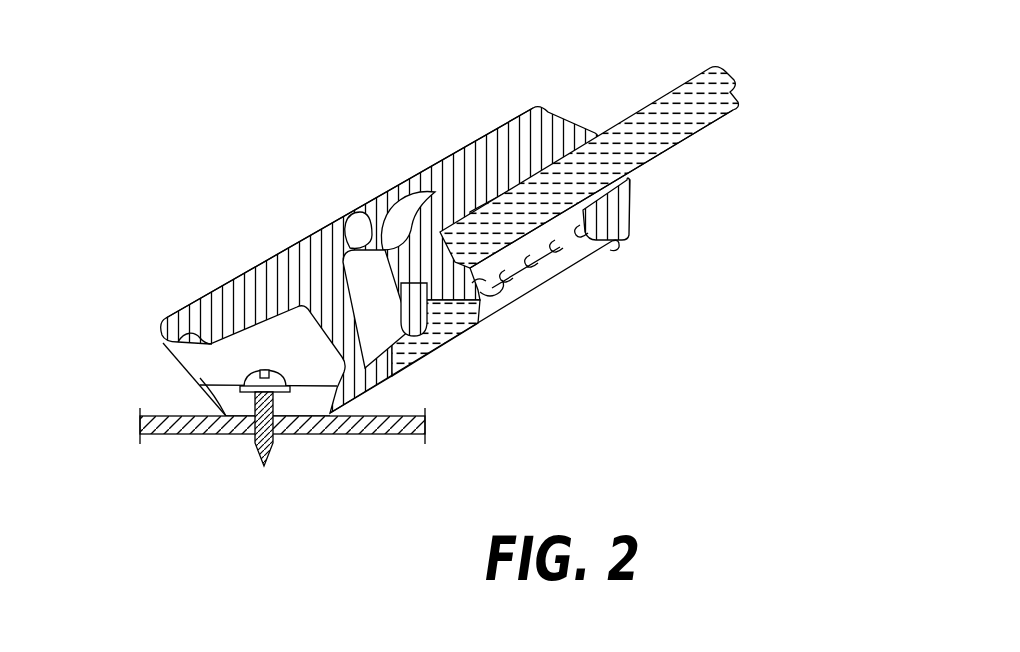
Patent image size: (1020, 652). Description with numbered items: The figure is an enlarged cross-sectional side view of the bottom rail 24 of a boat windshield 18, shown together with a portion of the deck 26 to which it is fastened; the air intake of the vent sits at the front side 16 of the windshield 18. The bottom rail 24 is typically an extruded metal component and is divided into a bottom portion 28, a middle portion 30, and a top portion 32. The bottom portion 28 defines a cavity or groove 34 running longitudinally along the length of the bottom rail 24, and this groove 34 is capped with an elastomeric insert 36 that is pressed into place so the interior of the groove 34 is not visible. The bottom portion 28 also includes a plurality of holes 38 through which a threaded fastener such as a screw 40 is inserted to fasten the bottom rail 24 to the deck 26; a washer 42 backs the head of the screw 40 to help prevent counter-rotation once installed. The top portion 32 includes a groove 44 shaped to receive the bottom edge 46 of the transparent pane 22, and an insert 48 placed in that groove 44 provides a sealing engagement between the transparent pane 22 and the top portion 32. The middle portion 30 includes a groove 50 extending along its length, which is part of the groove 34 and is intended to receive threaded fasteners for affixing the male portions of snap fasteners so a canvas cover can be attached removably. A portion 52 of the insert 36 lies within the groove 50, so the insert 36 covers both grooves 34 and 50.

The front side 16 is at (630, 65).
The windshield 18 is at (729, 137).
The transparent pane 22 is at (736, 74).
The bottom rail 24 is at (134, 377).
The deck 26 is at (370, 443).
The bottom portion 28 is at (343, 397).
The middle portion 30 is at (428, 344).
The top portion 32 is at (540, 290).
The groove 34 is at (166, 342).
The insert 36 is at (227, 291).
The holes 38 is at (217, 416).
The screw 40 is at (276, 430).
The washer 42 is at (290, 380).
The groove 44 is at (495, 298).
The bottom edge 46 is at (412, 245).
The insert 48 is at (628, 206).
The groove 50 is at (412, 337).
The portion of the insert 52 is at (477, 302).